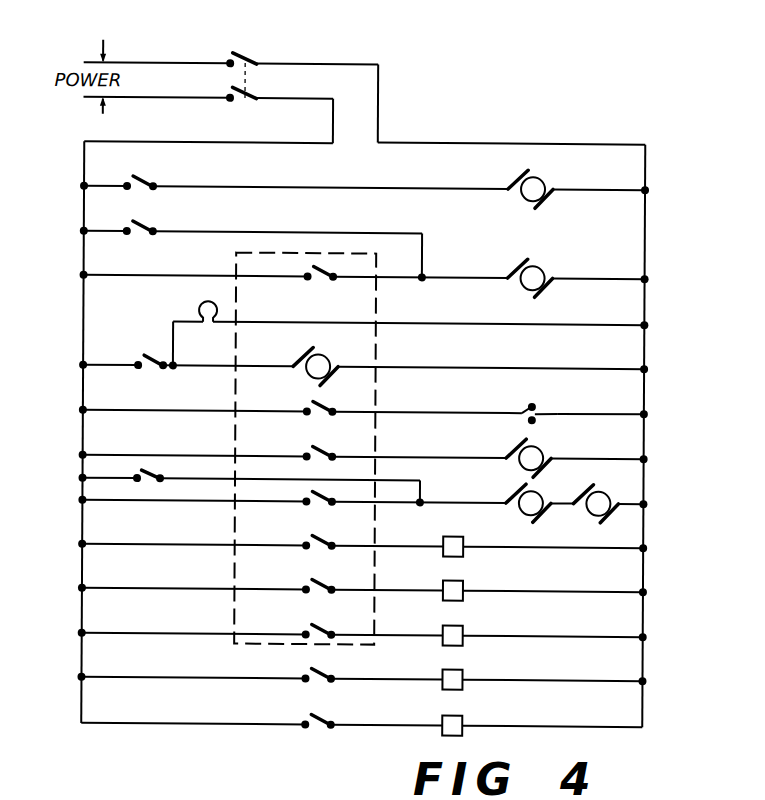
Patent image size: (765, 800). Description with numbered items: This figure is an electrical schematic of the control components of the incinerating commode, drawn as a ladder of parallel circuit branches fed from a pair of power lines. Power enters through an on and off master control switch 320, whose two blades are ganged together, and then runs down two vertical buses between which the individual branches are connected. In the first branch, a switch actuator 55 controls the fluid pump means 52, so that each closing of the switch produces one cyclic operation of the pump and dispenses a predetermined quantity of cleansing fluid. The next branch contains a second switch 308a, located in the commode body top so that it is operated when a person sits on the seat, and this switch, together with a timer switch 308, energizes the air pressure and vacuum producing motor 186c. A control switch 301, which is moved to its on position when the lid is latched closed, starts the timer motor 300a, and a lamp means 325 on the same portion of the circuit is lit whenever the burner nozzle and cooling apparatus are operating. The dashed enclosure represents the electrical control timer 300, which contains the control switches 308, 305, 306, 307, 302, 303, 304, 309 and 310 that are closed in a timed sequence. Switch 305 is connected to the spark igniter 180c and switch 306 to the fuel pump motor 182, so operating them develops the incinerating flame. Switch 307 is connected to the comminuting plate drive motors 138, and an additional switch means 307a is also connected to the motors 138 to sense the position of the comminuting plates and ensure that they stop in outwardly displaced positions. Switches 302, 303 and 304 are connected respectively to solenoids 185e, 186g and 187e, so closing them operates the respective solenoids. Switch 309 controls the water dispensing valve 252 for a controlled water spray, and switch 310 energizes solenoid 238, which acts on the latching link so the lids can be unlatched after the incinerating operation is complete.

The master control switch 320 is at (243, 53).
The switch actuator 55 is at (148, 178).
The second switch 308a is at (148, 225).
The electrical control timer 300 is at (349, 246).
The fluid pump means 52 is at (538, 184).
The air pressure and vacuum producing motor 186c is at (538, 275).
The lamp means 325 is at (201, 304).
The control switch 301 is at (161, 352).
The switch 308 is at (321, 276).
The timer motor 300a is at (314, 370).
The switch 305 is at (326, 403).
The switch 306 is at (326, 448).
The spark igniter 180c is at (538, 404).
The fuel pump motor 182 is at (540, 453).
The additional switch means 307a is at (158, 469).
The switch 307 is at (325, 490).
The comminuting plate drive motors 138 is at (598, 512).
The switch 302 is at (324, 532).
The solenoid 185e is at (455, 534).
The switch 303 is at (321, 576).
The solenoid 186g is at (466, 576).
The switch 304 is at (320, 624).
The solenoid 187e is at (467, 623).
The switch 309 is at (320, 668).
The water dispensing valve 252 is at (467, 670).
The switch 310 is at (320, 712).
The solenoid 238 is at (467, 711).